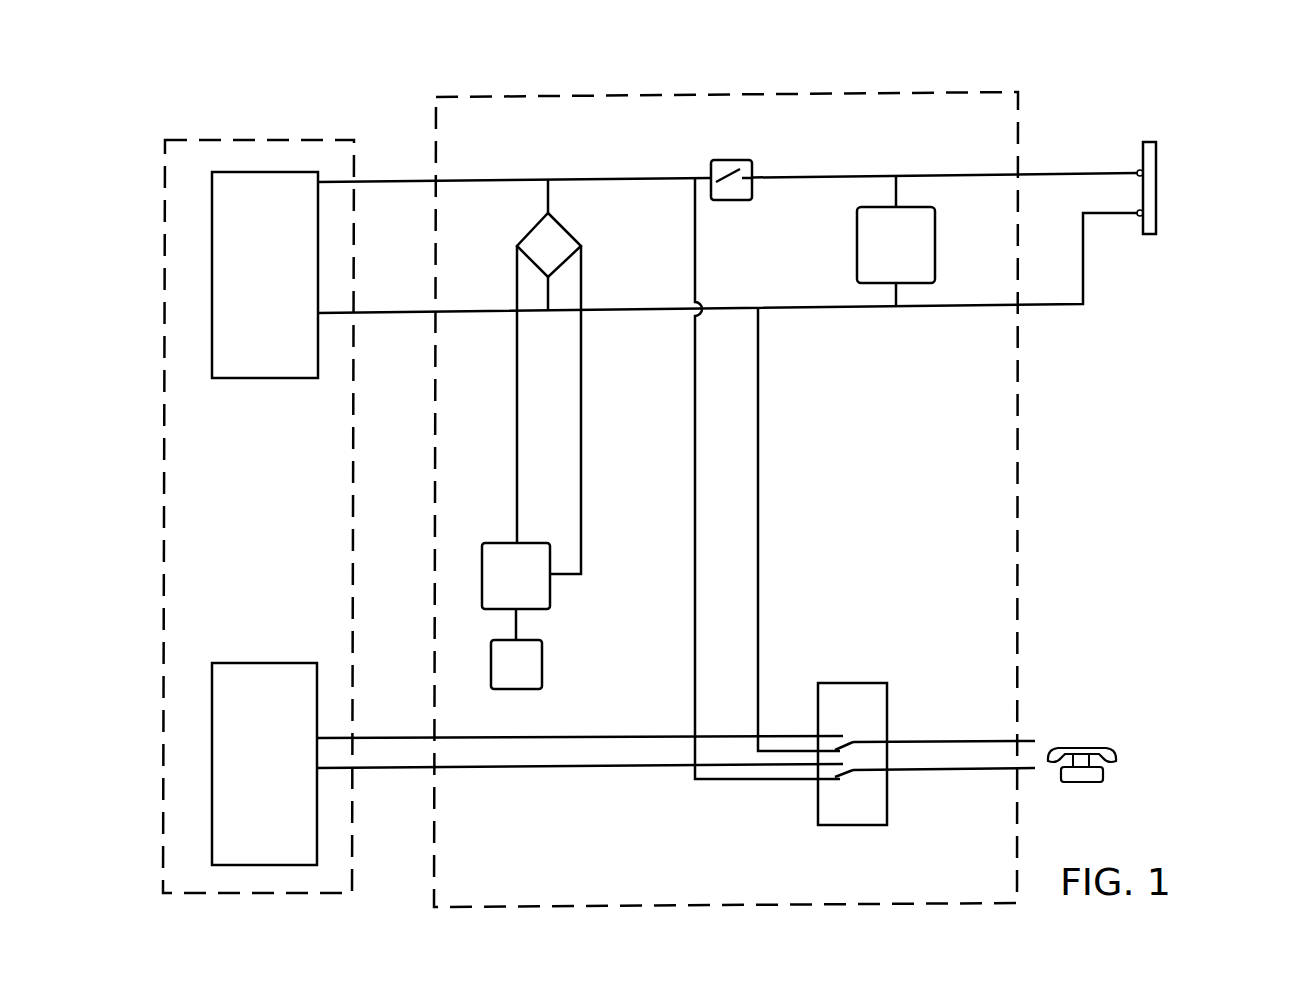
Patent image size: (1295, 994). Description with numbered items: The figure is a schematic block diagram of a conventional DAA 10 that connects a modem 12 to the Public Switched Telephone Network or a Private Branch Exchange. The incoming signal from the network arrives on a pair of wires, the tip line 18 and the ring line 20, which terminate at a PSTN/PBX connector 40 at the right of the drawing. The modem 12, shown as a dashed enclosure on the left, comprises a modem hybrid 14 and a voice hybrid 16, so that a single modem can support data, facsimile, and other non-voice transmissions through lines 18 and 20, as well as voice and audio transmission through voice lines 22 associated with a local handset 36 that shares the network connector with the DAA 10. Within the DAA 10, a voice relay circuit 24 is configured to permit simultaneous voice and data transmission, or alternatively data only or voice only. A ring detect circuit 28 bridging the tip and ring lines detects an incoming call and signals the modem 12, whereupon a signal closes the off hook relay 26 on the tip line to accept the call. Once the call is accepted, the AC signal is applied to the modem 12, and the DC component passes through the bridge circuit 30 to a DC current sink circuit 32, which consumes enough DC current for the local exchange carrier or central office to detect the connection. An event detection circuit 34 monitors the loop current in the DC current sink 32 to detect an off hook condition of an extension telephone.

The DAA 10 is at (821, 87).
The modem 12 is at (250, 136).
The modem hybrid 14 is at (225, 380).
The voice hybrid 16 is at (238, 661).
The tip line 18 is at (1053, 172).
The ring line 20 is at (1085, 287).
The voice lines 22 is at (1028, 740).
The voice relay circuit 24 is at (855, 683).
The off hook relay 26 is at (729, 160).
The ring detect circuit 28 is at (857, 245).
The bridge circuit 30 is at (555, 233).
The DC current sink circuit 32 is at (489, 542).
The event detection circuit 34 is at (543, 665).
The local handset 36 is at (1104, 775).
The PSTN/PBX connector 40 is at (1150, 142).